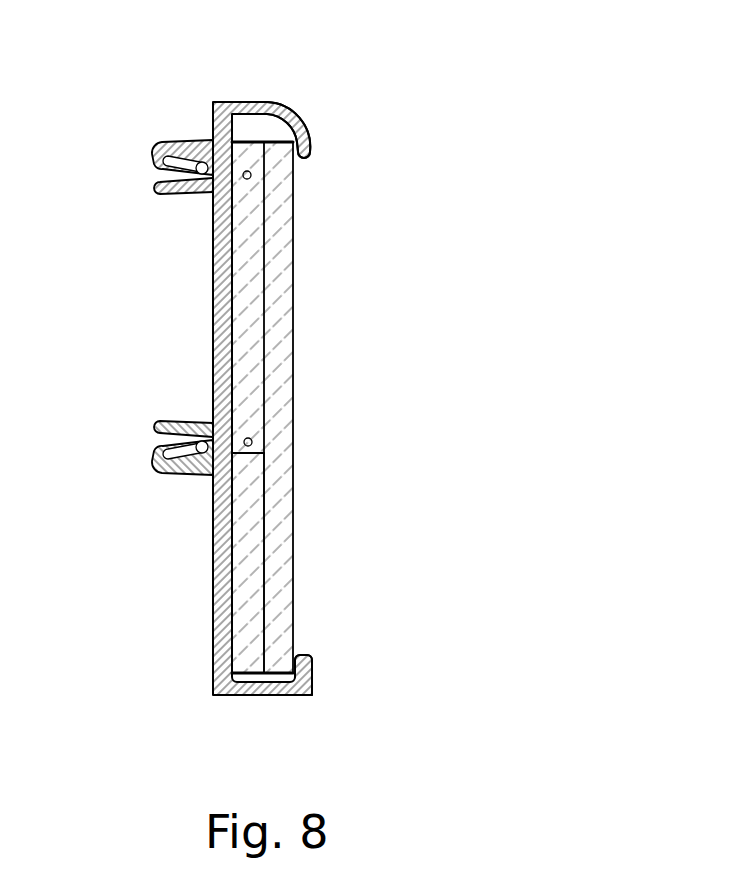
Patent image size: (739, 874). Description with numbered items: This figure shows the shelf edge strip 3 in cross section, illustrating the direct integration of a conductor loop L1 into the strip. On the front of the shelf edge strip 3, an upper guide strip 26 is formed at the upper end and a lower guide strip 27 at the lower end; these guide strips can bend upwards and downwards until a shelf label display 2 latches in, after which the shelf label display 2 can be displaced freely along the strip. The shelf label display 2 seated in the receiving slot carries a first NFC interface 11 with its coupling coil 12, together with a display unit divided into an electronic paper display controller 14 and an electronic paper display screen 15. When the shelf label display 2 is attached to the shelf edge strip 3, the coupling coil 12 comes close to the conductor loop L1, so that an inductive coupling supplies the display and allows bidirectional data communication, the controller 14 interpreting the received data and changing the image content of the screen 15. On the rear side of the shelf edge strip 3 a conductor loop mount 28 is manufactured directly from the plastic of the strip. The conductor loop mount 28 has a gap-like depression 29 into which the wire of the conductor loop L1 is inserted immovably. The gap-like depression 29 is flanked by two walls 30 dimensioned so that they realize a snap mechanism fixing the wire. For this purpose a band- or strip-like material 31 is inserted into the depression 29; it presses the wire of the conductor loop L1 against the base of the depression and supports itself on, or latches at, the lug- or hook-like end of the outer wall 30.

The shelf label display 2 is at (312, 327).
The shelf edge strip 3 is at (283, 94).
The first NFC interface 11 is at (248, 272).
The coupling coil 12 is at (251, 173).
The electronic paper display controller 14 is at (247, 592).
The electronic paper display screen 15 is at (283, 508).
The upper guide strip 26 is at (306, 128).
The lower guide strip 27 is at (290, 697).
The conductor loop mount 28 is at (148, 139).
The gap-like depression 29 is at (133, 182).
The walls 30 is at (178, 148).
The band- or strip-like material 31 is at (167, 163).
The conductor loop L1 is at (203, 190).